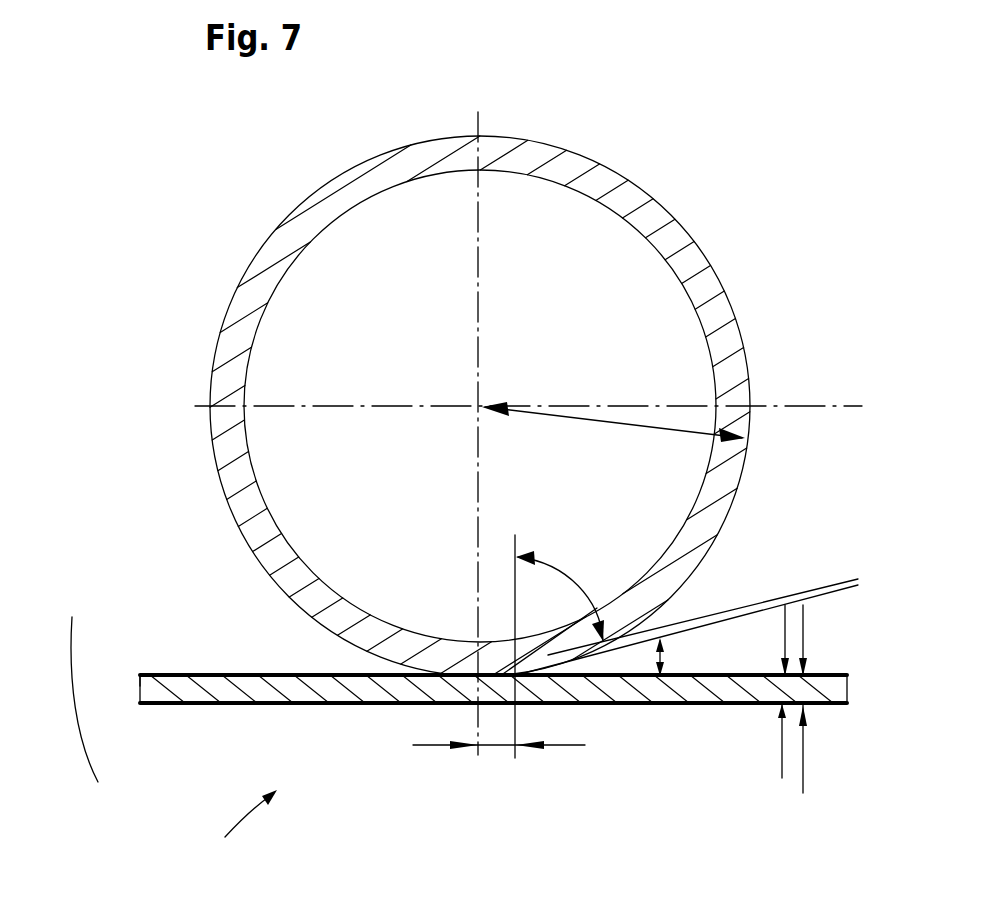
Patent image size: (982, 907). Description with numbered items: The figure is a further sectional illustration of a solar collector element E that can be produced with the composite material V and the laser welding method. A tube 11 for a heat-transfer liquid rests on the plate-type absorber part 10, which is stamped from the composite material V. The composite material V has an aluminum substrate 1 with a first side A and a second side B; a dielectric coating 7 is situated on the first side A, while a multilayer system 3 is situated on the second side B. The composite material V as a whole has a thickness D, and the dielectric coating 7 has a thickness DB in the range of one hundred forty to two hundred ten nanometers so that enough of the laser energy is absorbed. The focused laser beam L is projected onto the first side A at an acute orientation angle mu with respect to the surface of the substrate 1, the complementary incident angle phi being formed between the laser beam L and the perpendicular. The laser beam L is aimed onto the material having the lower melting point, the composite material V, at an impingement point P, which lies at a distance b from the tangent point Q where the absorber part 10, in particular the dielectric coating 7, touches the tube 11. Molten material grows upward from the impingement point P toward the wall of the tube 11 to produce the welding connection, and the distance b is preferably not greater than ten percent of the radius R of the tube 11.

The tube 11 is at (543, 153).
The absorber part 10 is at (260, 656).
The substrate 1 is at (140, 686).
The dielectric coating 7 is at (162, 672).
The multilayer system 3 is at (165, 703).
The composite material V is at (112, 590).
The first side A is at (188, 664).
The second side B is at (202, 703).
The solar collector element E is at (236, 840).
The radius of the tube R is at (594, 416).
The incident angle phi is at (566, 584).
The impingement point P is at (560, 703).
The tangent point Q is at (410, 703).
The distance b is at (562, 747).
The laser beam L is at (852, 581).
The orientation angle mu is at (664, 648).
The thickness of the composite material D is at (803, 790).
The thickness of the coating DB is at (782, 758).